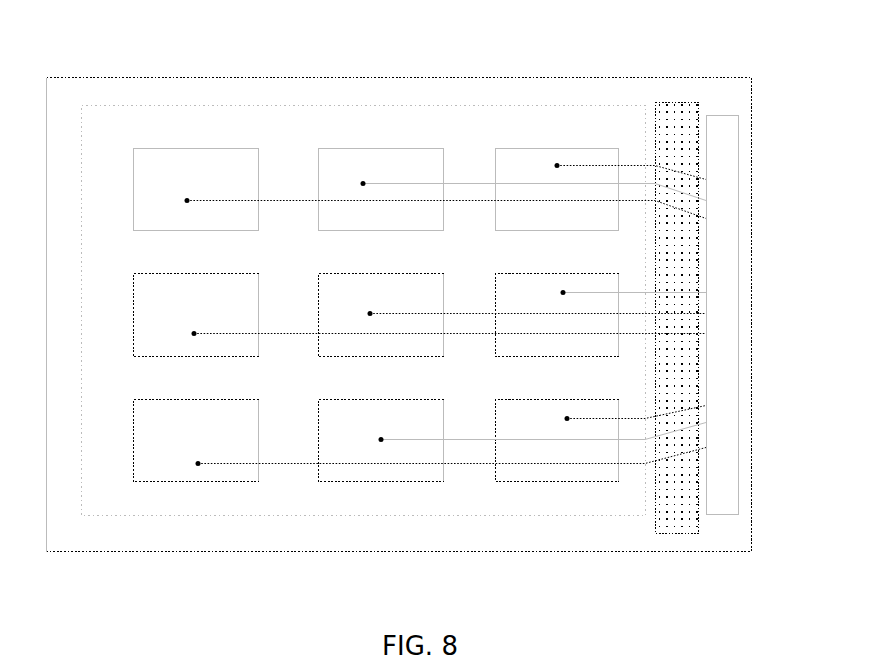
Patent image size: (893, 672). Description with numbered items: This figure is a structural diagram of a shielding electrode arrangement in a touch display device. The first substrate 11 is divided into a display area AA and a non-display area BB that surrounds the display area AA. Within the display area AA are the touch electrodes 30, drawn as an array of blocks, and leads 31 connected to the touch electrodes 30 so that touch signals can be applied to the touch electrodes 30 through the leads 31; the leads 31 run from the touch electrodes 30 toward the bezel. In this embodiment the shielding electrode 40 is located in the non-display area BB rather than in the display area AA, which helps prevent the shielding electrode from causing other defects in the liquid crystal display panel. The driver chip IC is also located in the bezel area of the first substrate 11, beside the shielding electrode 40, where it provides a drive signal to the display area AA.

The first substrate 11 is at (409, 76).
The touch electrodes 30 is at (187, 147).
The leads 31 is at (293, 197).
The shielding electrode 40 is at (672, 100).
The display area AA is at (412, 516).
The non-display area BB is at (722, 95).
The driver chip IC is at (723, 315).